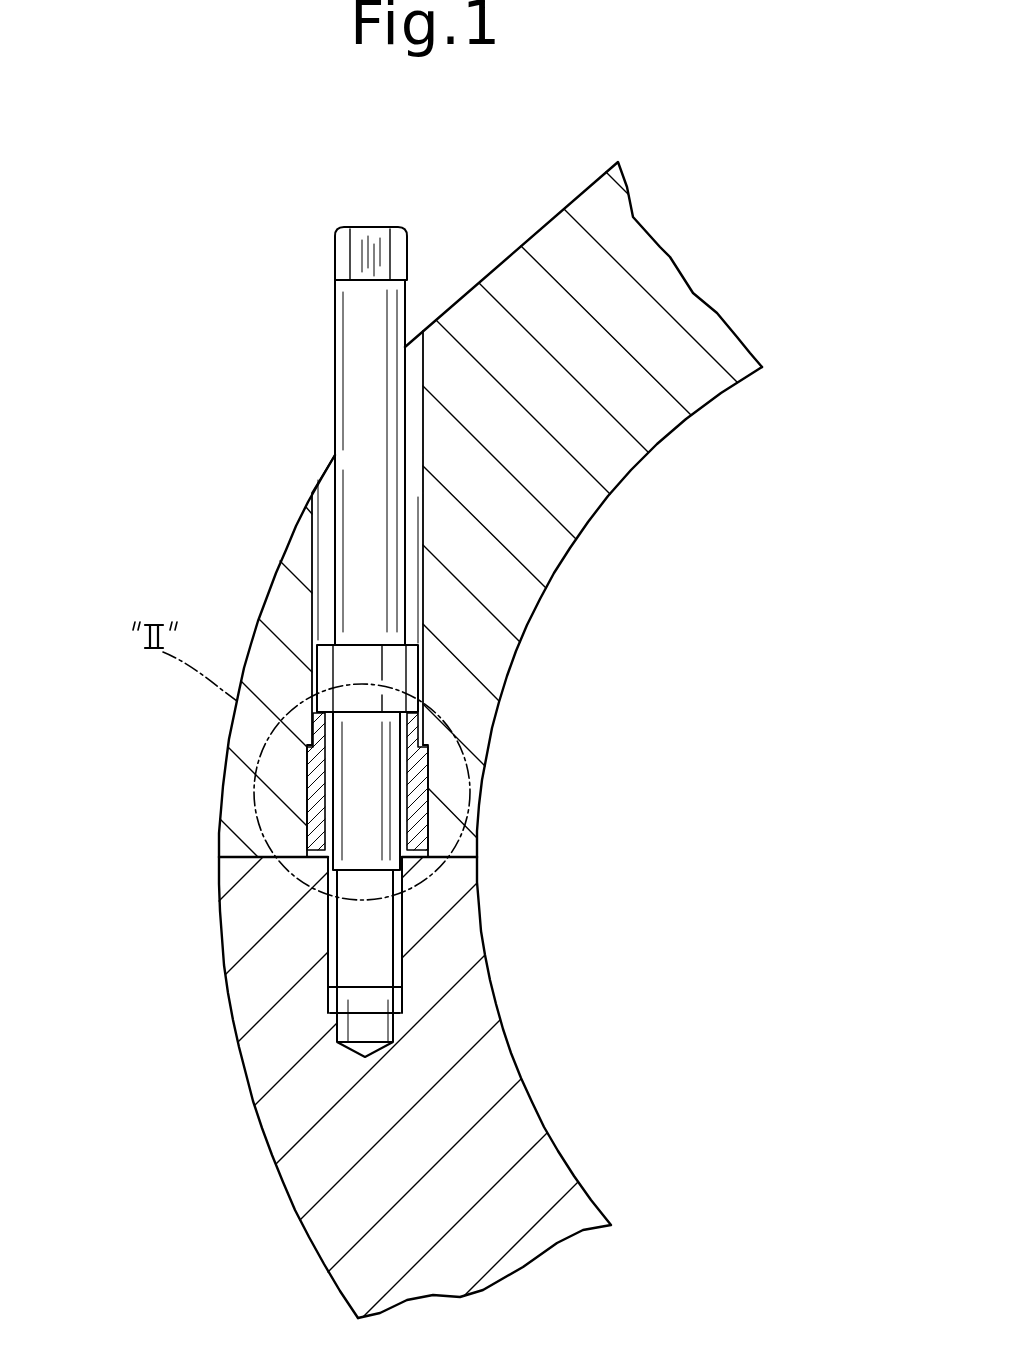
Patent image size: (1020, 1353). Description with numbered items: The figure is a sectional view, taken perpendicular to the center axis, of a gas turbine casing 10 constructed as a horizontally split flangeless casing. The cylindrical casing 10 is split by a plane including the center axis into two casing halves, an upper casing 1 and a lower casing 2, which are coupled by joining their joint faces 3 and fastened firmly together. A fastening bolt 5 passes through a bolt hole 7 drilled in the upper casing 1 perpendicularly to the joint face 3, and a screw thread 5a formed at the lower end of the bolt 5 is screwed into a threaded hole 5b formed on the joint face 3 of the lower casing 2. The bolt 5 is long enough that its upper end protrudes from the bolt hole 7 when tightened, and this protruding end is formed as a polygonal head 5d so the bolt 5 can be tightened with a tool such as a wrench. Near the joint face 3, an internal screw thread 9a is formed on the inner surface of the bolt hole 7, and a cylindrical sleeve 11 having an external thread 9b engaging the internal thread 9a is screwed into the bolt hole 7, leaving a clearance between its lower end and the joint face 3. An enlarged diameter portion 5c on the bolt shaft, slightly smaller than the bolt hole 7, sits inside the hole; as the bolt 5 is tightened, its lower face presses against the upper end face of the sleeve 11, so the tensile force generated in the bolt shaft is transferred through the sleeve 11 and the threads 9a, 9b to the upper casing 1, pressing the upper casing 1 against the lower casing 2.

The upper casing 1 is at (660, 422).
The lower casing 2 is at (538, 1188).
The joint face 3 is at (240, 857).
The fastening bolt 5 is at (382, 621).
The screw thread 5a is at (407, 908).
The threaded hole 5b is at (391, 937).
The enlarged diameter portion 5c is at (317, 687).
The polygonal head 5d is at (403, 256).
The bolt hole 7 is at (427, 428).
The internal screw thread 9a is at (427, 800).
The external thread 9b is at (557, 822).
The casing 10 is at (556, 176).
The cylindrical sleeve 11 is at (303, 798).